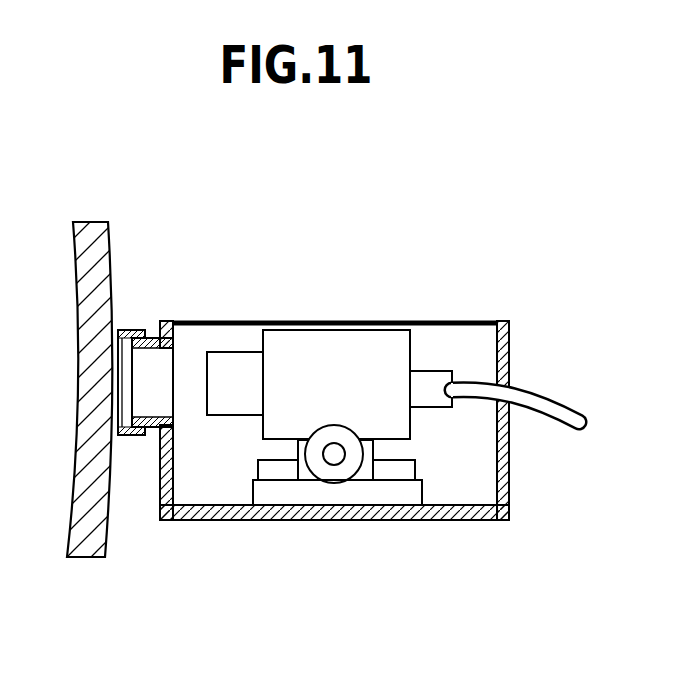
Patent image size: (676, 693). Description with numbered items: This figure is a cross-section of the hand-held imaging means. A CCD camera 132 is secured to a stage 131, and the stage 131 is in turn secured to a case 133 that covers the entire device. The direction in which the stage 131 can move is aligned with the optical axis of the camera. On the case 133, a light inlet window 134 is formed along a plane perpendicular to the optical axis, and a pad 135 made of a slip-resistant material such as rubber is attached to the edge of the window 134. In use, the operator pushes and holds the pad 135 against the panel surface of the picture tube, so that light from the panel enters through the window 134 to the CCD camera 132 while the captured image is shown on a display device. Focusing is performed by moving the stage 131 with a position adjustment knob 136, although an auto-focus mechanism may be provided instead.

The stage 131 is at (277, 488).
The CCD camera 132 is at (334, 337).
The case 133 is at (503, 322).
The light inlet window 134 is at (176, 362).
The pad 135 is at (123, 328).
The position adjustment knob 136 is at (342, 483).